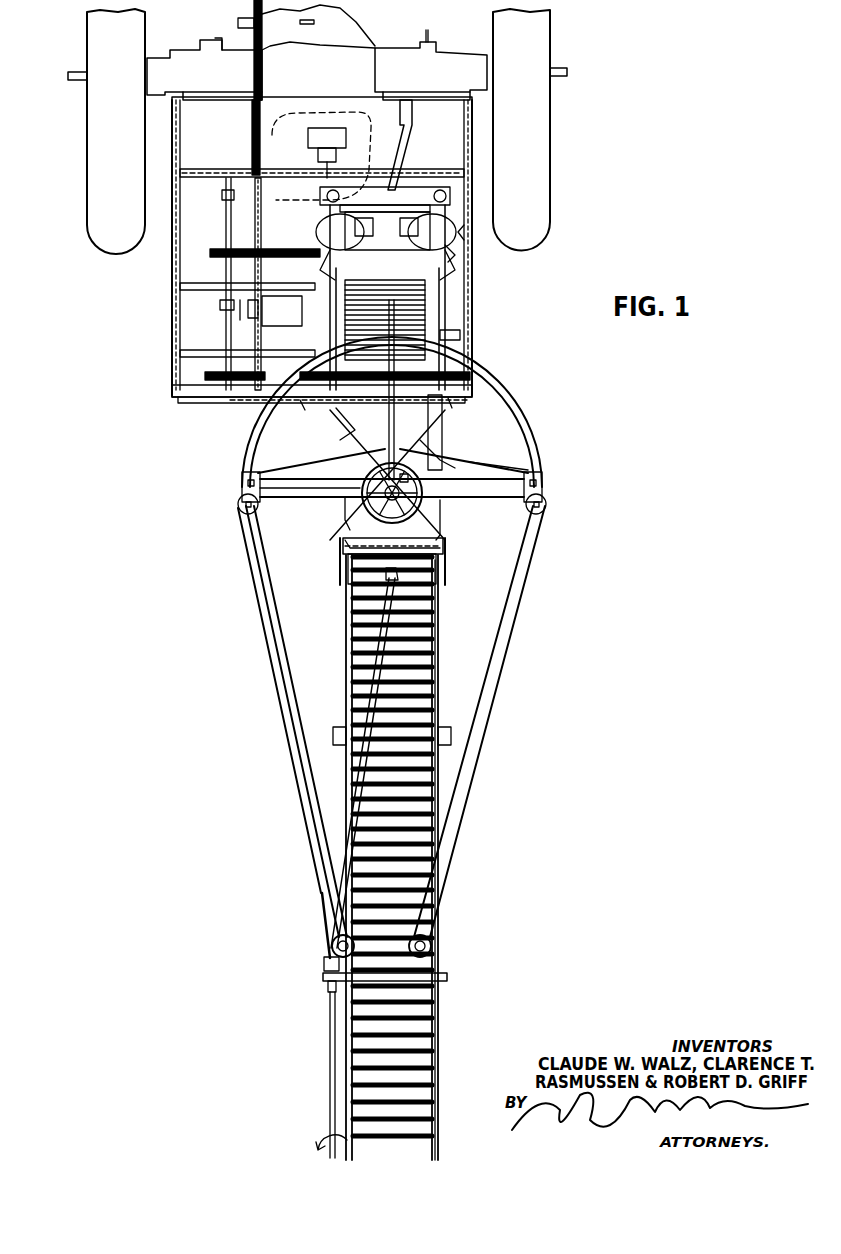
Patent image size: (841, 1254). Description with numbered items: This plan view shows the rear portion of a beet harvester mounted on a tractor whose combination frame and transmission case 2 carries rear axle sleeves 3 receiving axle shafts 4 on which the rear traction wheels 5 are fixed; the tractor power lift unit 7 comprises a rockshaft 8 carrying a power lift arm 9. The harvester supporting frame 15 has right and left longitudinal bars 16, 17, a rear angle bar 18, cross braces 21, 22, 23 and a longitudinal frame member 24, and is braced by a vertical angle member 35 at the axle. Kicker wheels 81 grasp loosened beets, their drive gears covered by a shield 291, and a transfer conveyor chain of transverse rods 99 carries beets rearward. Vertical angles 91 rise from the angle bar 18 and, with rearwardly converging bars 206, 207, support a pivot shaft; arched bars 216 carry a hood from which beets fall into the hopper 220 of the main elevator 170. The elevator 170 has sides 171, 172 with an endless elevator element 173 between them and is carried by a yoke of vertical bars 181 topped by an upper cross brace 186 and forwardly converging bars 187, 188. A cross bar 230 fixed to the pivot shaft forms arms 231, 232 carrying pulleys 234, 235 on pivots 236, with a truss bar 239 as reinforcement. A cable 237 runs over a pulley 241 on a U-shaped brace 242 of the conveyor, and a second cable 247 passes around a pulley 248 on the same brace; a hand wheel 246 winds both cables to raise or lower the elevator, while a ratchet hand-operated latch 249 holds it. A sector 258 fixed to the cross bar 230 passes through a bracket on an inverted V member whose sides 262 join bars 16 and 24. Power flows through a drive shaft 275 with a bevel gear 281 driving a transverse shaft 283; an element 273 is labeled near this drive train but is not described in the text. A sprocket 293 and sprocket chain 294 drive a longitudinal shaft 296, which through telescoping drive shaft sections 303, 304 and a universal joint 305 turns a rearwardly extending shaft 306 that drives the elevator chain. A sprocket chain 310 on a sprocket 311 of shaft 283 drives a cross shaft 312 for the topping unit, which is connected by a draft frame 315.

The combination frame and transmission case 2 is at (335, 52).
The rear axle sleeves 3 is at (175, 82).
The axle shafts 4 is at (75, 72).
The rear traction wheels 5 is at (98, 120).
The power lift unit 7 is at (293, 146).
The rockshaft 8 is at (415, 112).
The power lift arm 9 is at (385, 143).
The supporting frame 15 is at (160, 344).
The right hand longitudinal bar 16 is at (466, 283).
The left hand longitudinal bar 17 is at (175, 266).
The rear angle bar 18 is at (192, 398).
The cross brace 21 is at (190, 172).
The cross brace 22 is at (195, 287).
The cross brace 23 is at (198, 360).
The longitudinal frame member 24 is at (318, 205).
The vertical angle member 35 is at (220, 32).
The kicker wheel 81 is at (480, 236).
The vertical angles 91 is at (320, 405).
The transverse rods 99 is at (430, 322).
The main elevator 170 is at (500, 882).
The side 171 is at (347, 665).
The side 172 is at (435, 678).
The endless elevator element 173 is at (440, 795).
The vertical bars 181 is at (340, 542).
The upper cross brace 186 is at (345, 580).
The forwardly converging bar 187 is at (350, 528).
The forwardly converging bar 188 is at (432, 522).
The rearwardly converging bar 206 is at (350, 436).
The rearwardly converging bar 207 is at (440, 415).
The arched bars 216 is at (445, 452).
The hopper 220 is at (300, 454).
The cross bar 230 is at (498, 458).
The arm 231 is at (285, 480).
The arm 232 is at (490, 486).
The pulley 234 is at (240, 500).
The pulley 235 is at (550, 502).
The pivots 236 is at (242, 480).
The cable 237 is at (508, 645).
The truss bar 239 is at (510, 462).
The pulley 241 is at (435, 953).
The U-shaped brace 242 is at (445, 985).
The hand wheel 246 is at (345, 512).
The second cable 247 is at (292, 725).
The pulley 248 is at (336, 940).
The ratchet hand-operated latch 249 is at (432, 500).
The sector 258 is at (490, 368).
The sides 262 is at (455, 336).
The rod 273 is at (228, 198).
The drive shaft 275 is at (228, 223).
The bevel gear 281 is at (222, 308).
The transverse shaft 283 is at (298, 316).
The shield 291 is at (455, 250).
The sprocket 293 is at (205, 376).
The sprocket chain 294 is at (255, 400).
The longitudinally extending shaft 296 is at (350, 426).
The drive shaft section 303 is at (358, 785).
The drive shaft section 304 is at (330, 912).
The universal joint 305 is at (326, 970).
The rearwardly extending shaft 306 is at (330, 1044).
The sprocket chain 310 is at (252, 135).
The sprocket 311 is at (262, 300).
The cross shaft 312 is at (310, 22).
The draft frame 315 is at (240, 22).